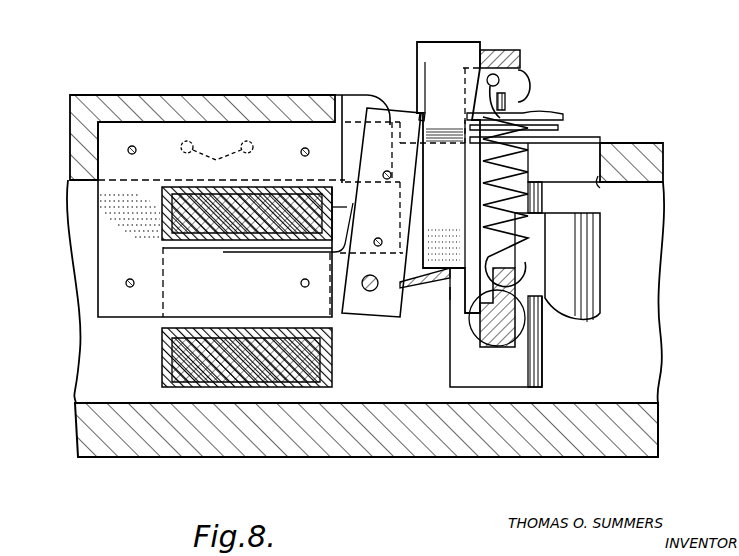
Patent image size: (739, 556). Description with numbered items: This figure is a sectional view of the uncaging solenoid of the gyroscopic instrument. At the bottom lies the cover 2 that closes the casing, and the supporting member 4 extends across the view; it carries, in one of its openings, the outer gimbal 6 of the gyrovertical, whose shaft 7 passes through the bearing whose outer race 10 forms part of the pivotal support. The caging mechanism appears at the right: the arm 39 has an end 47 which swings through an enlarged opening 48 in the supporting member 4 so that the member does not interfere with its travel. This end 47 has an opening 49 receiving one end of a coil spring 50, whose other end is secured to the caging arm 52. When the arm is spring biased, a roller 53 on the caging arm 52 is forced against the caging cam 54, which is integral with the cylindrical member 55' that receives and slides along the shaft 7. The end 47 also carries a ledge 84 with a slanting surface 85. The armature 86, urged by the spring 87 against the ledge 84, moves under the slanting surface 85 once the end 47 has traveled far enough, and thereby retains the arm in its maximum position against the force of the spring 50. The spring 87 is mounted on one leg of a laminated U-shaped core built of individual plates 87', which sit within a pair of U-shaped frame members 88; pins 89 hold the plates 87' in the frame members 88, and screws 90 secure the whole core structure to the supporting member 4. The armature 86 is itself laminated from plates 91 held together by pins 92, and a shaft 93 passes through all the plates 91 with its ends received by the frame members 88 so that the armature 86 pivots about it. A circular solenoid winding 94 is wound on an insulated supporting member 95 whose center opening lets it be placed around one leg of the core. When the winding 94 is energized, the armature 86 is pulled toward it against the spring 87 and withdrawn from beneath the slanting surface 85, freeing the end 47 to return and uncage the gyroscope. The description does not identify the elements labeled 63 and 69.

The cover 2 is at (660, 428).
The supporting member 4 is at (266, 95).
The outer gimbal 6 is at (553, 113).
The shaft 7 is at (560, 127).
The outer race 10 is at (568, 139).
The arm 39 is at (418, 268).
The end of arm 47 is at (520, 53).
The enlarged opening 48 is at (600, 188).
The opening 49 is at (500, 81).
The coil spring 50 is at (528, 167).
The caging arm 52 is at (510, 333).
The roller 53 is at (512, 337).
The caging cam 54 is at (557, 252).
The cylindrical member 55' is at (473, 337).
The pin 63 is at (450, 292).
The spring hook end 69 is at (512, 249).
The ledge 84 is at (417, 50).
The slanting surface 85 is at (426, 116).
The armature 86 is at (401, 114).
The spring 87 is at (288, 245).
The plates 87' is at (191, 219).
The U-shaped frame members 88 is at (350, 127).
The pins 89 is at (135, 153).
The screws 90 is at (217, 156).
The plates 91 is at (367, 138).
The pins 92 is at (387, 180).
The shaft 93 is at (376, 277).
The solenoid winding 94 is at (243, 378).
The insulated supporting member 95 is at (333, 368).